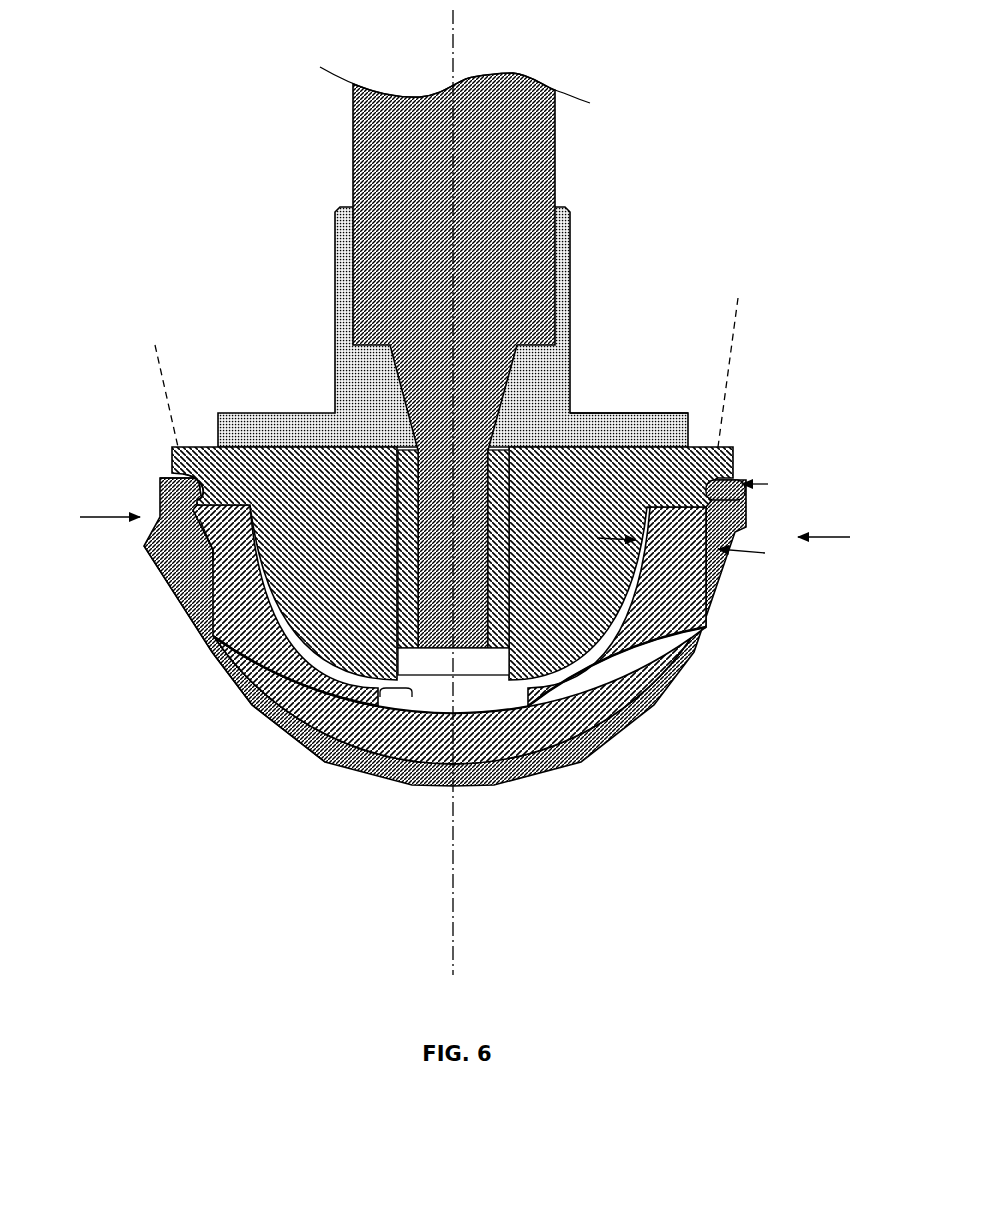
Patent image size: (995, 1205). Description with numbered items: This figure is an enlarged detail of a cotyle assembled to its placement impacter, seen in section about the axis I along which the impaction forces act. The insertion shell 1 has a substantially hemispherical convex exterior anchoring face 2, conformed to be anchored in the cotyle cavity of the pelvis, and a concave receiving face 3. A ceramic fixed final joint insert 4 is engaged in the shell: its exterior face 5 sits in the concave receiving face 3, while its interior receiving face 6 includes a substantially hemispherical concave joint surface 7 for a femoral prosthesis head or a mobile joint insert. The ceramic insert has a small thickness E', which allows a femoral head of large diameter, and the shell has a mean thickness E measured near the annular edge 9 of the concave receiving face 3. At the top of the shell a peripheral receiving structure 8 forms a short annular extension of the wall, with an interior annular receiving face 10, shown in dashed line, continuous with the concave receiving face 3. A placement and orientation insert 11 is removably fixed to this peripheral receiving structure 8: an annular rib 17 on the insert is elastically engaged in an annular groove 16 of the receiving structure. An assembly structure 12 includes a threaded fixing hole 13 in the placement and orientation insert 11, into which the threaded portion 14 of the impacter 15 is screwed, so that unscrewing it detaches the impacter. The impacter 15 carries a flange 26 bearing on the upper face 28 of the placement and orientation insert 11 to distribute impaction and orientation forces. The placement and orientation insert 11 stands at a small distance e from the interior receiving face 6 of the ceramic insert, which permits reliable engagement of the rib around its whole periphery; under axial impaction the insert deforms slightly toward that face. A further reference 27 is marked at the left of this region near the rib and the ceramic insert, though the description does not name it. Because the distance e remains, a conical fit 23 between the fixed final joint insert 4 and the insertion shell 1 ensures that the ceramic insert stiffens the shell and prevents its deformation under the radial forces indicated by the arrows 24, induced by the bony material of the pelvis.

The insertion shell 1 is at (642, 707).
The exterior anchoring face 2 is at (325, 750).
The concave receiving face 3 is at (250, 708).
The ceramic fixed final joint insert 4 is at (570, 750).
The exterior face 5 is at (212, 660).
The interior receiving face 6 is at (245, 497).
The concave joint surface 7 is at (390, 698).
The peripheral receiving structure 8 is at (148, 480).
The annular edge 9 is at (185, 475).
The interior annular receiving face 10 is at (158, 375).
The placement and orientation insert 11 is at (688, 465).
The assembly structure 12 is at (560, 728).
The threaded fixing hole 13 is at (477, 660).
The threaded portion 14 is at (430, 540).
The impacter 15 is at (565, 160).
The annular groove 16 is at (745, 490).
The annular rib 17 is at (220, 495).
The conical fit 23 is at (700, 580).
The arrows 24 is at (110, 520).
The flange 26 is at (640, 430).
The gap 27 is at (198, 525).
The upper face 28 is at (583, 443).
The thickness E is at (774, 484).
The thickness E' is at (693, 551).
The distance e is at (208, 530).
The axis I is at (465, 492).